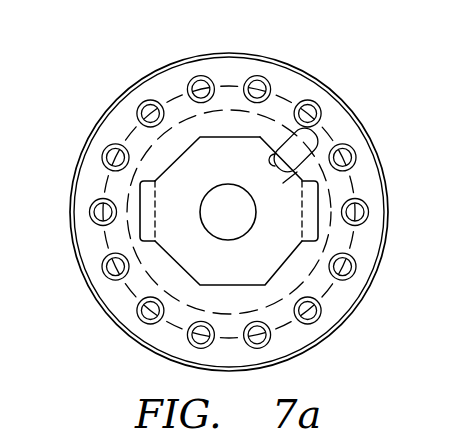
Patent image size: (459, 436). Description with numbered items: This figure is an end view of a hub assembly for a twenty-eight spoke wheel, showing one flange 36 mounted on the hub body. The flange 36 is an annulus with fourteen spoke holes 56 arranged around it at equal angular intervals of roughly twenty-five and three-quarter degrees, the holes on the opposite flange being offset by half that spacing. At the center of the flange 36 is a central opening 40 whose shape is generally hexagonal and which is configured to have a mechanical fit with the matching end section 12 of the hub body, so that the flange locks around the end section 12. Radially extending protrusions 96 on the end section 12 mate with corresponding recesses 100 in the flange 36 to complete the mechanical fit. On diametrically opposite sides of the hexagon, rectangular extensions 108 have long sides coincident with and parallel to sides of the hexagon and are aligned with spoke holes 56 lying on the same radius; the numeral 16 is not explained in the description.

The flange 36 is at (118, 82).
The central opening 40 is at (324, 292).
The spoke holes 56 is at (294, 323).
The end section 12 is at (246, 272).
The central opening 16 is at (228, 212).
The radially extending protrusions 96 is at (310, 178).
The mating recesses 100 is at (298, 128).
The extensions 108 is at (308, 198).